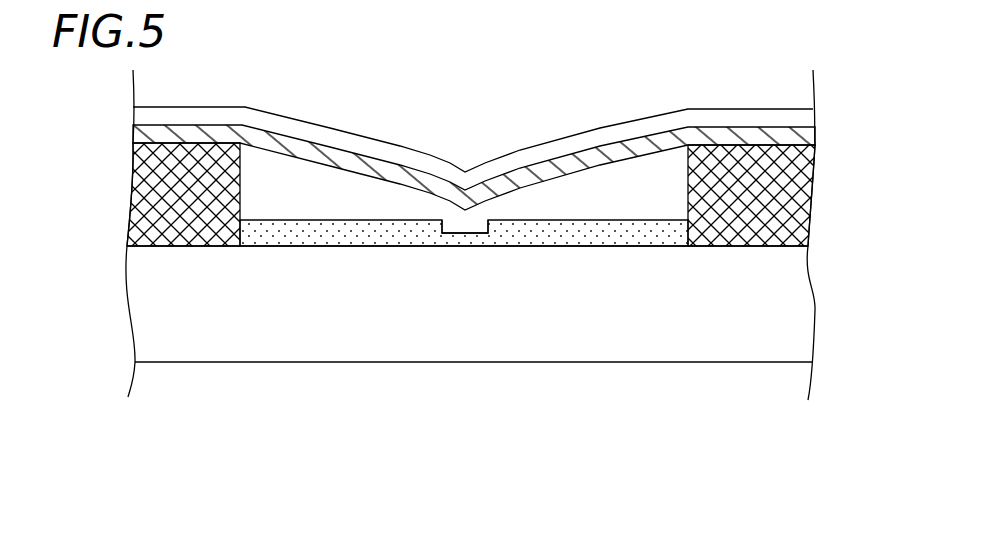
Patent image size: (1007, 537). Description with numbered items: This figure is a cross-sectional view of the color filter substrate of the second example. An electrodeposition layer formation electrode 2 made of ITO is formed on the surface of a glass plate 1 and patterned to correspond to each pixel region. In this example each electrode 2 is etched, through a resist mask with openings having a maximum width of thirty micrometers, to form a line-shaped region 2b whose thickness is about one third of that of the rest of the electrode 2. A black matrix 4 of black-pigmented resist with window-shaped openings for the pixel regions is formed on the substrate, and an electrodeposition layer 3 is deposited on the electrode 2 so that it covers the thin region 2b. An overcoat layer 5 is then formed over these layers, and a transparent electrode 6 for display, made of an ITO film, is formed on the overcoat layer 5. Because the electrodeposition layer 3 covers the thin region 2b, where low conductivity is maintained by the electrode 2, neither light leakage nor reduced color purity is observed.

The glass plate 1 is at (170, 345).
The electrodeposition layer formation electrode 2 is at (337, 232).
The line-shaped region 2b is at (490, 247).
The electrodeposition layer 3 is at (325, 178).
The black matrix 4 is at (750, 247).
The overcoat layer 5 is at (435, 188).
The transparent electrode 6 is at (620, 118).